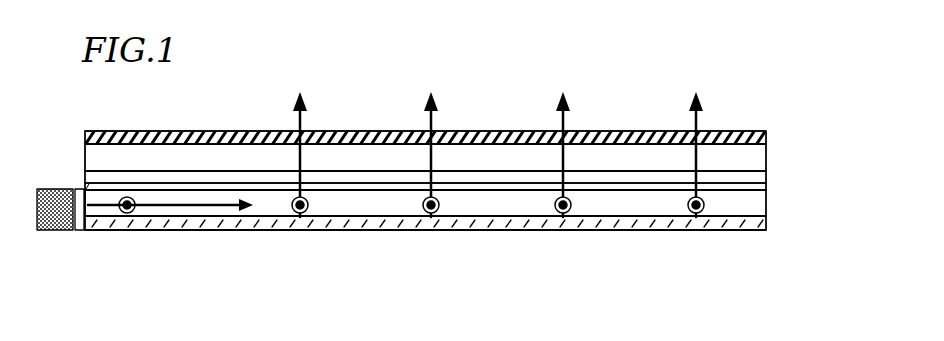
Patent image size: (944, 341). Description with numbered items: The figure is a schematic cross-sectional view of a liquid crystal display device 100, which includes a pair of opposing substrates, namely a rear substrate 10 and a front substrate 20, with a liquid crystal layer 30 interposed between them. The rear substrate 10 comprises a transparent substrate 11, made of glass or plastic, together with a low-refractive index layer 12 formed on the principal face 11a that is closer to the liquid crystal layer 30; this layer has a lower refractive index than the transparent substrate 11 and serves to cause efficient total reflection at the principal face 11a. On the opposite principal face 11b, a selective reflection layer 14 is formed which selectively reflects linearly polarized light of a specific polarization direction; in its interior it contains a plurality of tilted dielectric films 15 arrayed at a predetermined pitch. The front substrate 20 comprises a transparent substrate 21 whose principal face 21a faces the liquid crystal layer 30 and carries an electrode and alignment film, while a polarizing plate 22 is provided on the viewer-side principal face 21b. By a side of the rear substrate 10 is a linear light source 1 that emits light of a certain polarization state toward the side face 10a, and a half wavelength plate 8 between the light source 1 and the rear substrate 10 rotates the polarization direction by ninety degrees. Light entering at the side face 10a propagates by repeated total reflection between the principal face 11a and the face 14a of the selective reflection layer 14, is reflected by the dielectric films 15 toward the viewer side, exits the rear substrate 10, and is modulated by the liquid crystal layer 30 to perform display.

The liquid crystal display device 100 is at (759, 71).
The rear substrate 10 is at (840, 175).
The side face of the rear substrate 10a is at (89, 199).
The transparent substrate 11 is at (758, 207).
The principal face of the transparent substrate closer to the liquid crystal layer 11a is at (602, 194).
The principal face of the transparent substrate opposite from the liquid crystal lay 11b is at (639, 215).
The low-refractive index layer 12 is at (758, 187).
The selective reflection layer 14 is at (758, 223).
The face of the selective reflection layer opposite from the viewer side 14a is at (390, 228).
The dielectric film 15 is at (507, 226).
The front substrate 20 is at (840, 125).
The transparent substrate 21 is at (758, 163).
The principal face of the transparent substrate closer to the liquid crystal layer 21a is at (638, 169).
The viewer-side principal face of the transparent substrate 21b is at (615, 149).
The polarizing plate 22 is at (767, 138).
The liquid crystal layer 30 is at (758, 180).
The linear light source 1 is at (65, 230).
The ½ wavelength plate 8 is at (76, 230).